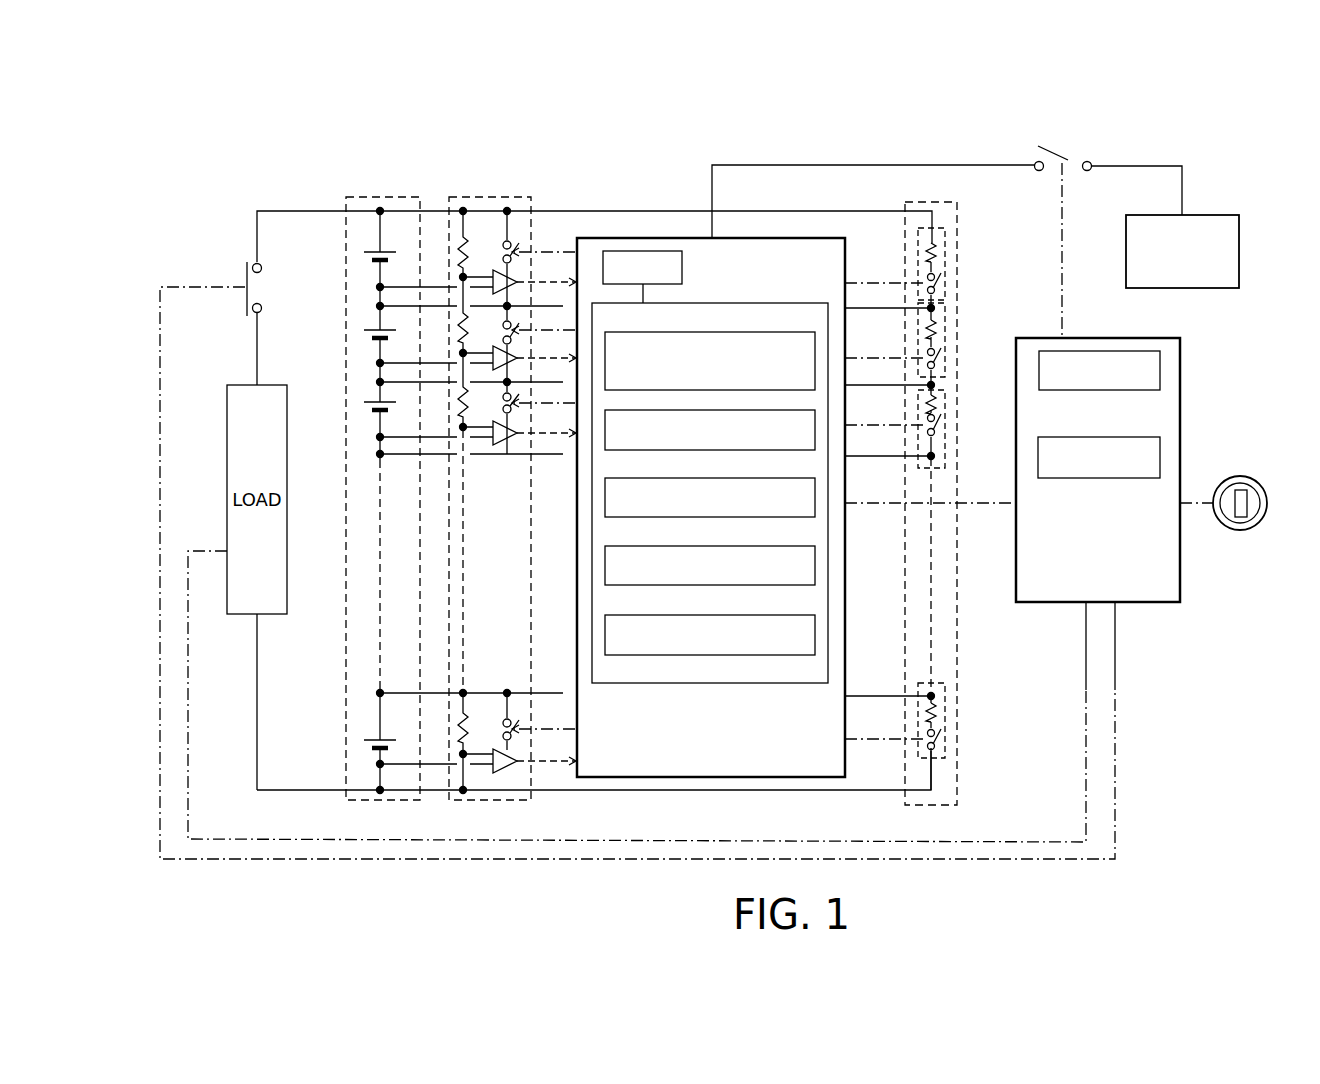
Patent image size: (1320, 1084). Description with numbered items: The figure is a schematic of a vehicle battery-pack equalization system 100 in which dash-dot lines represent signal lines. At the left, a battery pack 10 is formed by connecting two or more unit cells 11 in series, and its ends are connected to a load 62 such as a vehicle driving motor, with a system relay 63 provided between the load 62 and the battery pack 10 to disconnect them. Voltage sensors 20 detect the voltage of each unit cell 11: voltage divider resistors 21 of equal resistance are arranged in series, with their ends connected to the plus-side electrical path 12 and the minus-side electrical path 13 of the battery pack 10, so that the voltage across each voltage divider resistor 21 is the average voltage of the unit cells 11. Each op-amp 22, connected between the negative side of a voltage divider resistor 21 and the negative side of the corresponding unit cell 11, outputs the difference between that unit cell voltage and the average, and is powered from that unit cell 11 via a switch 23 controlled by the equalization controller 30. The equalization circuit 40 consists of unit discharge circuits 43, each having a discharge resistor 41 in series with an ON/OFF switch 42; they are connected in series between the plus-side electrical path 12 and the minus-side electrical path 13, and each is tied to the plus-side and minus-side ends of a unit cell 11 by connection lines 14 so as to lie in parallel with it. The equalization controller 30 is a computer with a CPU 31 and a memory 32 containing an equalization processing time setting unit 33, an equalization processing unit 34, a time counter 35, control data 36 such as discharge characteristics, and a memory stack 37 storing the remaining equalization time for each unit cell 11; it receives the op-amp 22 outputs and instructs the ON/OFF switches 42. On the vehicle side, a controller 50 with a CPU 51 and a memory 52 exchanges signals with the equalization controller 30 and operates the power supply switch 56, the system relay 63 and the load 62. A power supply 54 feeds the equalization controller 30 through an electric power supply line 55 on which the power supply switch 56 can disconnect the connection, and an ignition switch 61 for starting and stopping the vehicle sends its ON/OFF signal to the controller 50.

The vehicle battery-pack equalization system 100 is at (602, 176).
The battery pack 10 is at (378, 197).
The unit cell 11 is at (367, 258).
The plus-side electrical path 12 is at (300, 210).
The minus-side electrical path 13 is at (312, 792).
The connection line 14 is at (398, 306).
The voltage sensor 20 is at (485, 197).
The voltage divider resistor 21 is at (467, 256).
The op-amp 22 is at (520, 280).
The switch 23 is at (521, 242).
The equalization controller 30 is at (658, 238).
The CPU 31 is at (682, 268).
The memory 32 is at (755, 303).
The equalization processing time setting unit 33 is at (757, 332).
The equalization processing unit 34 is at (735, 450).
The time counter 35 is at (735, 517).
The control data 36 is at (735, 585).
The memory stack 37 is at (735, 655).
The equalization circuit 40 is at (960, 222).
The discharge resistor 41 is at (940, 250).
The ON/OFF switch 42 is at (942, 283).
The unit discharge circuit 43 is at (955, 203).
The controller 50 is at (1182, 378).
The CPU 51 is at (1087, 390).
The memory 52 is at (1099, 478).
The power supply 54 is at (1240, 238).
The electric power supply line 55 is at (1160, 165).
The power supply switch 56 is at (1050, 150).
The ignition switch 61 is at (1243, 476).
The load 62 is at (243, 616).
The system relay 63 is at (245, 270).